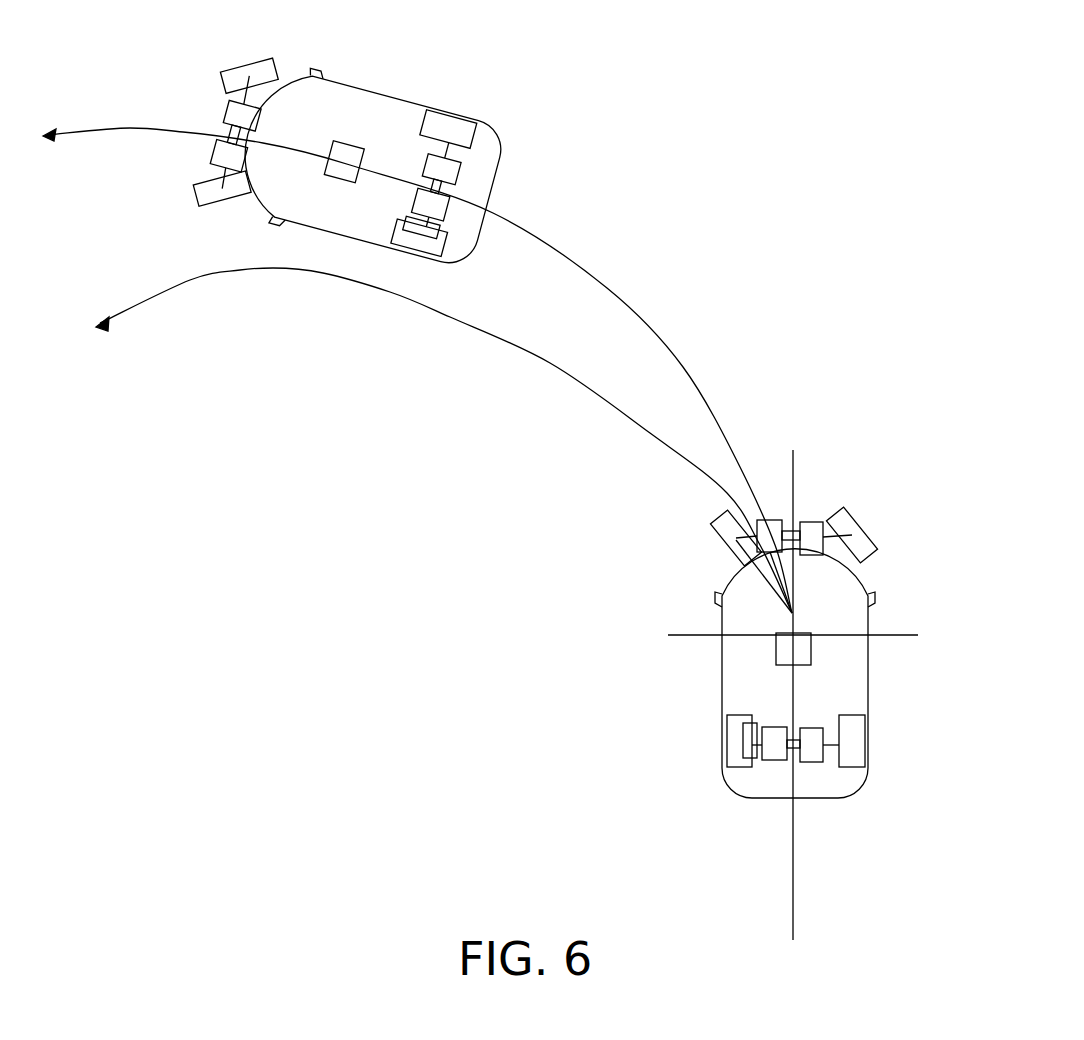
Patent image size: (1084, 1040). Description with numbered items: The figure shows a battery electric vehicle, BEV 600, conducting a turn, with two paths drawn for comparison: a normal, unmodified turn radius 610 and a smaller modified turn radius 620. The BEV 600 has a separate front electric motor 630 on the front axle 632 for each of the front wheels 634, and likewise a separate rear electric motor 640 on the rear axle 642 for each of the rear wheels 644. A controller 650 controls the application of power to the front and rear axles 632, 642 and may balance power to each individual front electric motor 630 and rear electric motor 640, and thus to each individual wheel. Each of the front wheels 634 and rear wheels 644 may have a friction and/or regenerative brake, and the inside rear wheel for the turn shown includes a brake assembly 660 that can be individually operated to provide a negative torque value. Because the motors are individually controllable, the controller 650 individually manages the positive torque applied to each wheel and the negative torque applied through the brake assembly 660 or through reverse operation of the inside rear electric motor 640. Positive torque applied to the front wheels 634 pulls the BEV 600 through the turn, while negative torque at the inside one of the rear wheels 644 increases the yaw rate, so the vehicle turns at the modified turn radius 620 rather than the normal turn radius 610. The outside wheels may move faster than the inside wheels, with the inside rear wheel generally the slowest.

The BEV 600 is at (387, 98).
The normal turn radius 610 is at (607, 290).
The modified turn radius 620 is at (190, 281).
The front electric motor 630 is at (250, 107).
The front axle 632 is at (240, 131).
The front wheel 634 is at (248, 74).
The rear electric motor 640 is at (780, 760).
The rear axle 642 is at (438, 187).
The rear wheel 644 is at (853, 737).
The controller 650 is at (327, 170).
The brake assembly 660 is at (440, 233).